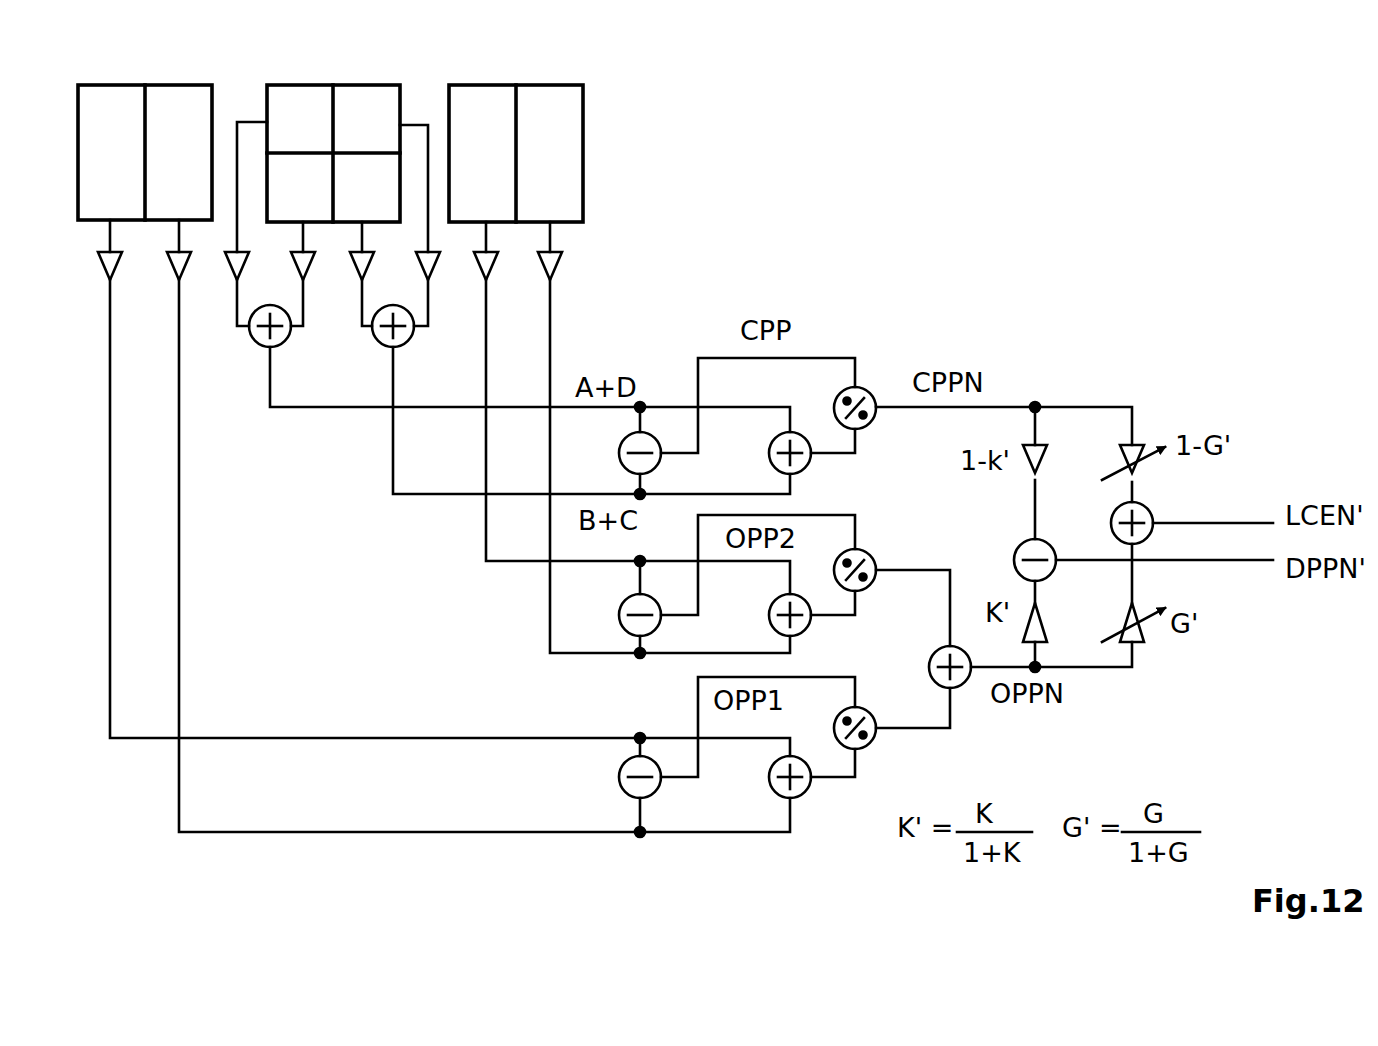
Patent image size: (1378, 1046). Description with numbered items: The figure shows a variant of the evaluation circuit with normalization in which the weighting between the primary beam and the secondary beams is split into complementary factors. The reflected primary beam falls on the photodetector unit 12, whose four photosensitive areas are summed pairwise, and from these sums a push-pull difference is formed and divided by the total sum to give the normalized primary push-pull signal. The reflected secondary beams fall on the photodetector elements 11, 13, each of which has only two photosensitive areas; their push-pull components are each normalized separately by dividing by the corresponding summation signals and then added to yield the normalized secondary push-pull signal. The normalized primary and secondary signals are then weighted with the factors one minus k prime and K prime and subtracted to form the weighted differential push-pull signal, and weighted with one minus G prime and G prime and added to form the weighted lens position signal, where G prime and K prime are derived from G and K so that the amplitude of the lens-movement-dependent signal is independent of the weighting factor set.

The photodetector element 11 is at (153, 80).
The photodetector unit 12 is at (338, 80).
The photodetector element 13 is at (525, 80).